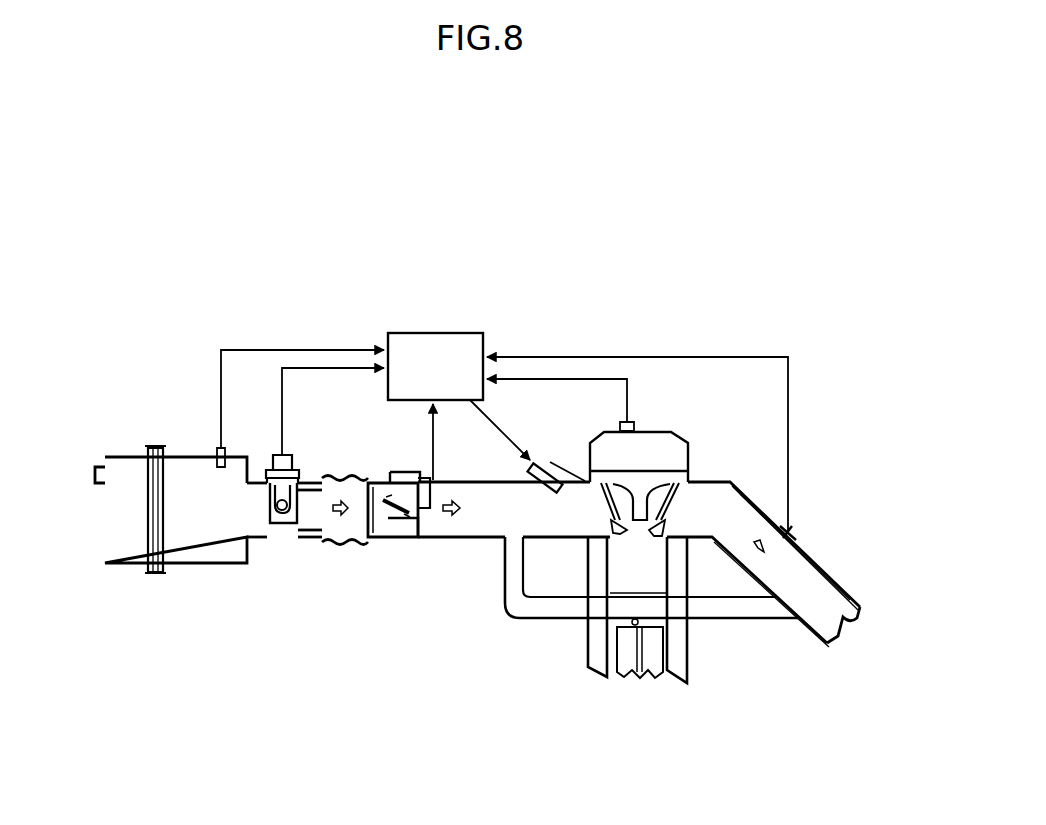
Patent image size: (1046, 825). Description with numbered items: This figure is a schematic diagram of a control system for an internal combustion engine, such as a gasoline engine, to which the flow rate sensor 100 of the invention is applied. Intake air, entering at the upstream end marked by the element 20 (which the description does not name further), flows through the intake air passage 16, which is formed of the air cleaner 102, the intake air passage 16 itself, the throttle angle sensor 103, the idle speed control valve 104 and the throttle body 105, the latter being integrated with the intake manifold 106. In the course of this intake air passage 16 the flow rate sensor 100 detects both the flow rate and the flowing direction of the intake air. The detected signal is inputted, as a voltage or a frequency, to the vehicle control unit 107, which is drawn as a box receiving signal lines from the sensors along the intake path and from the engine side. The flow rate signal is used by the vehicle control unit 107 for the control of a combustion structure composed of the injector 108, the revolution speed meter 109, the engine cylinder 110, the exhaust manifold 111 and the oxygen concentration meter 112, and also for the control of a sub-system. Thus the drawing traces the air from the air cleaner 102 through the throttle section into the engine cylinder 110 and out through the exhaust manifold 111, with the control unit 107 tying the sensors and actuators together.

The intake air 20 is at (80, 471).
The air cleaner 102 is at (190, 467).
The flow rate sensor 100 is at (277, 453).
The intake air passage 16 is at (282, 530).
The throttle angle sensor 103 is at (393, 503).
The idle speed control valve 104 is at (403, 530).
The throttle body 105 is at (383, 532).
The intake manifold 106 is at (563, 527).
The vehicle control unit 107 is at (437, 343).
The injector 108 is at (552, 473).
The revolution speed meter 109 is at (637, 427).
The engine cylinder 110 is at (632, 583).
The exhaust manifold 111 is at (819, 570).
The oxygen concentration meter 112 is at (790, 532).